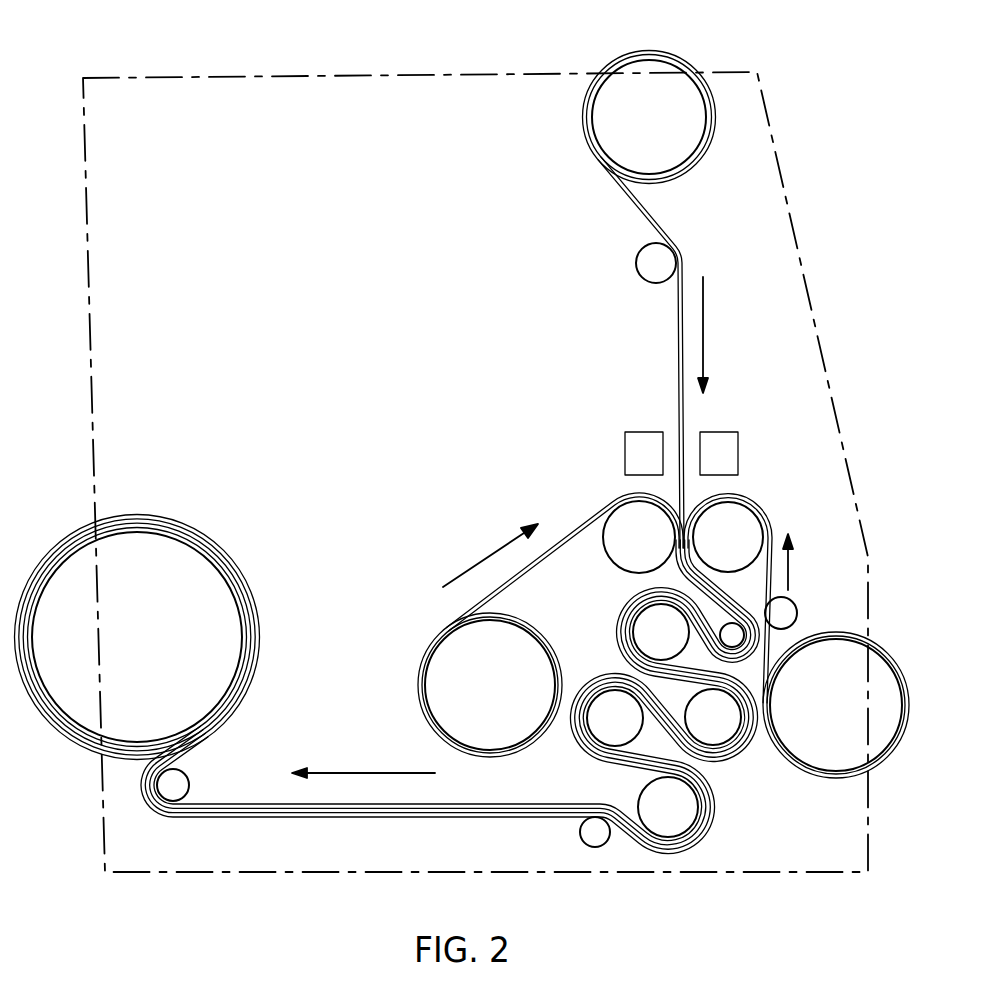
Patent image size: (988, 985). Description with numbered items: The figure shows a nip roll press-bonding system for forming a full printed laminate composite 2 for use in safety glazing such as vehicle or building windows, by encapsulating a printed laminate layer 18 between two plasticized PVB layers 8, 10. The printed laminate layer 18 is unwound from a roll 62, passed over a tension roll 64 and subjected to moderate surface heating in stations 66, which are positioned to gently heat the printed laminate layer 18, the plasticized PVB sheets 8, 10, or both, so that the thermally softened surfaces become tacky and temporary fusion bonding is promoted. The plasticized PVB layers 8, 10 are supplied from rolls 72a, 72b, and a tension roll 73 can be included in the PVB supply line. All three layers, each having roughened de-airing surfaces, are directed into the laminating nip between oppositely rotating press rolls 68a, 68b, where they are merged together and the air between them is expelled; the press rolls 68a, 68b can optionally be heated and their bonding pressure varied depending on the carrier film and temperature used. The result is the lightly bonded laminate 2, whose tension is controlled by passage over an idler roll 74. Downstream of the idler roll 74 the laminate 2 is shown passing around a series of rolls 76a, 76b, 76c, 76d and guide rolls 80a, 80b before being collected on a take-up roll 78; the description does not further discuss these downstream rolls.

The laminate composite 2 is at (733, 760).
The plasticized PVB layer 8 is at (567, 533).
The plasticized PVB layer 10 is at (769, 537).
The printed laminate layer 18 is at (670, 247).
The roll 62 is at (642, 50).
The tension roll 64 is at (648, 285).
The stations 66 is at (631, 468).
The press roll 68a is at (616, 551).
The press roll 68b is at (705, 551).
The roll 72a is at (466, 701).
The roll 72b is at (812, 721).
The tension roll 73 is at (797, 605).
The idler roll 74 is at (722, 628).
The drying roller 76a is at (638, 646).
The drying roller 76b is at (690, 731).
The drying roller 76c is at (592, 732).
The drying roller 76d is at (645, 821).
The laminate take-up roll 78 is at (134, 653).
The guide roller 80a is at (590, 832).
The guide roller 80b is at (180, 782).